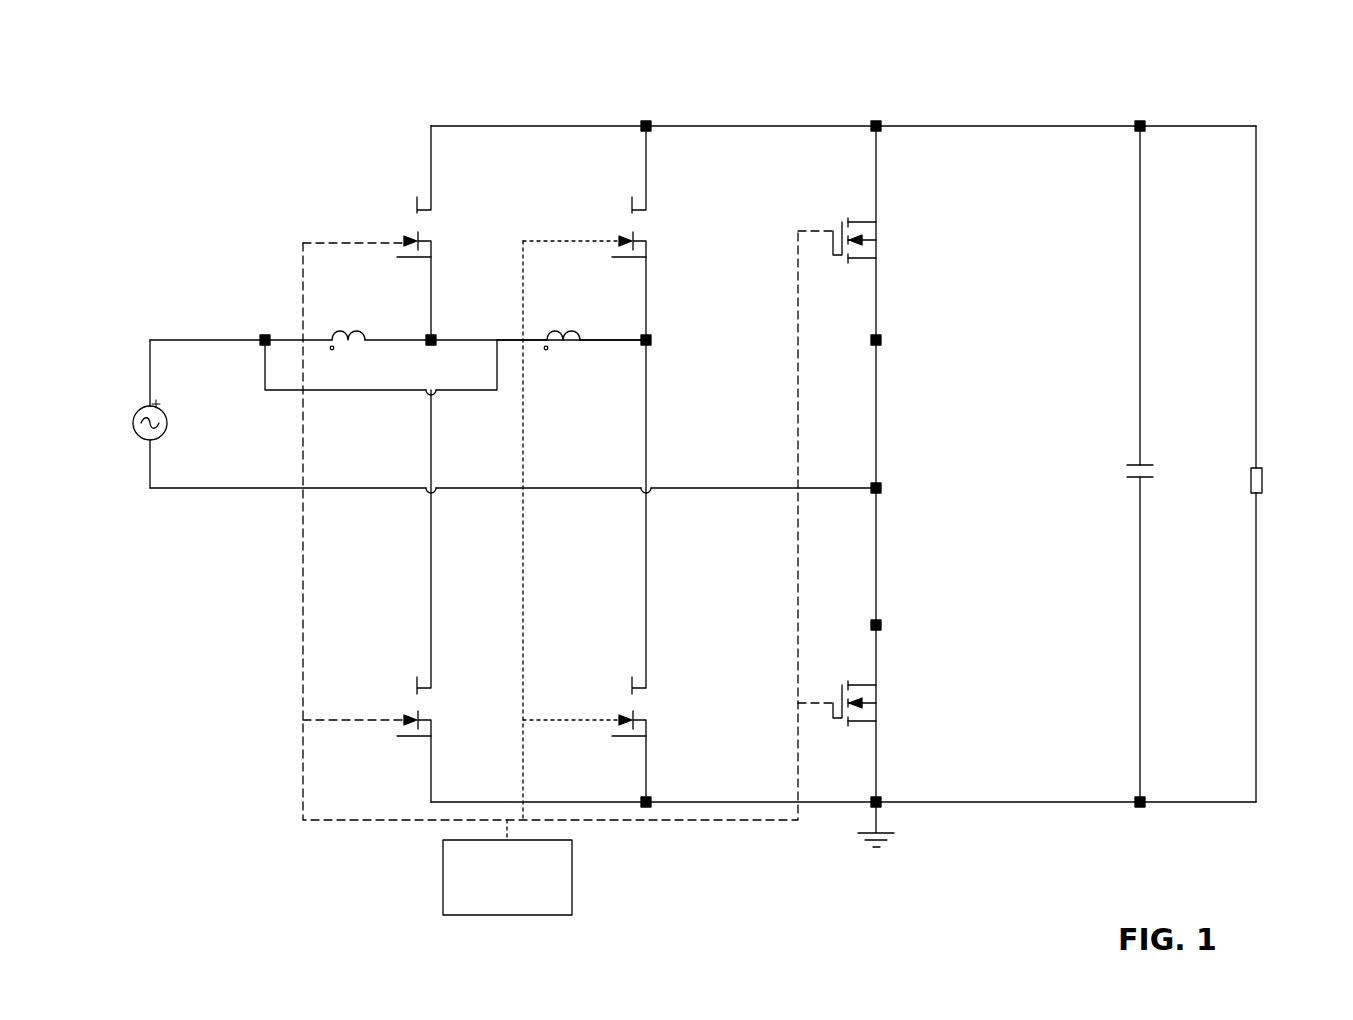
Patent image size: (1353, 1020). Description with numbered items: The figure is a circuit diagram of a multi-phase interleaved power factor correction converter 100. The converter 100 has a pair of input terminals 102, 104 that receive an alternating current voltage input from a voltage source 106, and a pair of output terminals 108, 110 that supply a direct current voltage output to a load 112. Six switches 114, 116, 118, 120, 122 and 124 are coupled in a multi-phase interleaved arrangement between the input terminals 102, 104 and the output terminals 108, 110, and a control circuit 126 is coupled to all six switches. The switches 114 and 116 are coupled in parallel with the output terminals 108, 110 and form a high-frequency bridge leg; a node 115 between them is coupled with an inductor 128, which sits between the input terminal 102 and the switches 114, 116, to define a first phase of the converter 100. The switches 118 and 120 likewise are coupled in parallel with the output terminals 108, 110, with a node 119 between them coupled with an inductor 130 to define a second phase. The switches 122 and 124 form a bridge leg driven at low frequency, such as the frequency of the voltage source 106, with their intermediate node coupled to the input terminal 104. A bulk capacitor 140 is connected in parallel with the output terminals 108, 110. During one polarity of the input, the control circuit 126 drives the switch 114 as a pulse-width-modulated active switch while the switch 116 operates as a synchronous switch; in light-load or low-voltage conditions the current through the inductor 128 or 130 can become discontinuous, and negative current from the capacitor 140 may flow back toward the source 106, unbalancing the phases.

The multi-phase interleaved power factor correction converter 100 is at (165, 80).
The input terminal 102 is at (150, 338).
The input terminal 104 is at (150, 492).
The voltage source 106 is at (163, 414).
The output terminal 108 is at (1240, 125).
The output terminal 110 is at (1256, 805).
The load 112 is at (1260, 466).
The switch 114 is at (420, 295).
The node 115 is at (434, 336).
The switch 116 is at (420, 777).
The switch 118 is at (622, 293).
The node 119 is at (652, 340).
The switch 120 is at (622, 777).
The switch 122 is at (865, 297).
The switch 124 is at (862, 761).
The control circuit 126 is at (443, 876).
The inductor 128 is at (405, 378).
The inductor 130 is at (605, 383).
The bulk capacitor 140 is at (1215, 493).